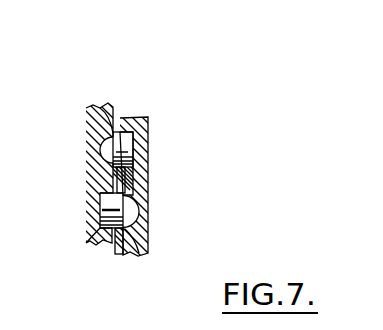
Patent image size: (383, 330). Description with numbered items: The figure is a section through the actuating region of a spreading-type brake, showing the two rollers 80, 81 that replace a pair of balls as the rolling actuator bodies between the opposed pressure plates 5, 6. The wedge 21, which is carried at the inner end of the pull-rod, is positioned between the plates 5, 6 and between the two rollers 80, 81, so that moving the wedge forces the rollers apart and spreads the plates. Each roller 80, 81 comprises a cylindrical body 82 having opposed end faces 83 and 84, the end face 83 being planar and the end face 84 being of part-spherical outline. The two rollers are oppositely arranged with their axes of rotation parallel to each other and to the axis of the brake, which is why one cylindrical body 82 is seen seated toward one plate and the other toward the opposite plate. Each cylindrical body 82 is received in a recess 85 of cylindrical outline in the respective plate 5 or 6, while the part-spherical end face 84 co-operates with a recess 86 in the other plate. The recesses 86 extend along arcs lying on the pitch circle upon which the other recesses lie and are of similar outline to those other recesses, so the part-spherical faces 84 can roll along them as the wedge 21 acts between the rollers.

The pressure plate 5 is at (147, 122).
The pressure plate 6 is at (90, 138).
The wedge 21 is at (116, 181).
The roller 80 is at (100, 212).
The roller 81 is at (133, 157).
The cylindrical body 82 is at (125, 137).
The end face 83 is at (133, 145).
The part-spherical end face 84 is at (101, 141).
The recess 85 is at (134, 172).
The recess 86 is at (103, 105).